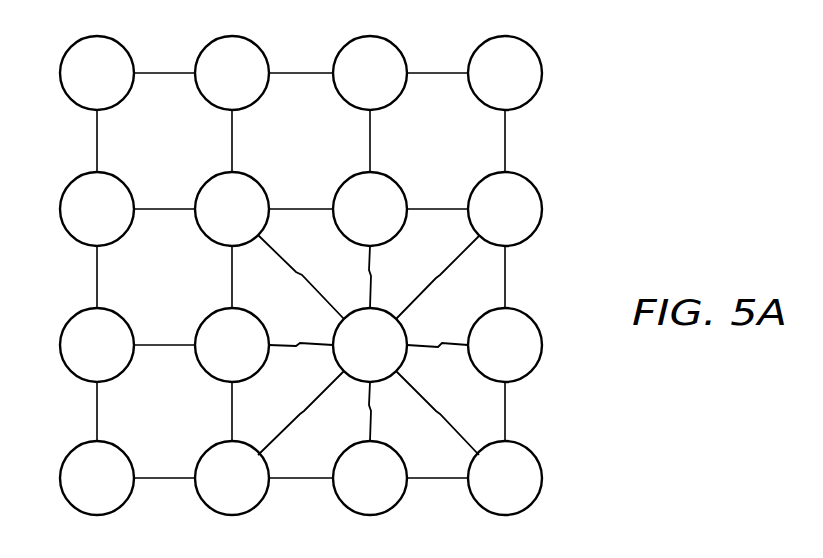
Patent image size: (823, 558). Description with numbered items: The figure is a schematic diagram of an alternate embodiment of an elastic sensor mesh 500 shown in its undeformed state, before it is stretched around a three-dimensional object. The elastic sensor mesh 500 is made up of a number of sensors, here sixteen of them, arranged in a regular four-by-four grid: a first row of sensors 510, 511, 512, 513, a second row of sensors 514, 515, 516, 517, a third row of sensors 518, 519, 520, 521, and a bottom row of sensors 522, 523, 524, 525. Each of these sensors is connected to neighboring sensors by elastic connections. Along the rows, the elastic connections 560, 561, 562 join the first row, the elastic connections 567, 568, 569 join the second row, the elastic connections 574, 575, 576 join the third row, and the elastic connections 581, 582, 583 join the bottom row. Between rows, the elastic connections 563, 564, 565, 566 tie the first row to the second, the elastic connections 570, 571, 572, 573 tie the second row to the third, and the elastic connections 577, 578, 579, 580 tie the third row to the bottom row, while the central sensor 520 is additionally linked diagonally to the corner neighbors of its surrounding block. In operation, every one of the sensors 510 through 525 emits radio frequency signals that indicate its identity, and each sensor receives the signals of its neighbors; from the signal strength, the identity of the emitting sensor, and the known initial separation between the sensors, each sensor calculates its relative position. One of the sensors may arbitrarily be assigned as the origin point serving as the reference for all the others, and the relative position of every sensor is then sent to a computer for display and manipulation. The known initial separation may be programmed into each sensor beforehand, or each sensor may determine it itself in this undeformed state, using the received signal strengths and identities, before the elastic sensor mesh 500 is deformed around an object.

The elastic sensor mesh 500 is at (633, 65).
The sensor 510 is at (118, 85).
The sensor 511 is at (253, 85).
The sensor 512 is at (391, 85).
The sensor 513 is at (526, 85).
The sensor 514 is at (118, 221).
The sensor 515 is at (253, 221).
The sensor 516 is at (391, 221).
The sensor 517 is at (526, 221).
The sensor 518 is at (118, 357).
The sensor 519 is at (253, 357).
The sensor 520 is at (391, 357).
The sensor 521 is at (526, 357).
The sensor 522 is at (118, 490).
The sensor 523 is at (253, 490).
The sensor 524 is at (391, 490).
The sensor 525 is at (526, 490).
The elastic connection 560 is at (165, 72).
The elastic connection 561 is at (300, 72).
The elastic connection 562 is at (437, 72).
The elastic connection 563 is at (97, 138).
The elastic connection 564 is at (232, 137).
The elastic connection 565 is at (368, 137).
The elastic connection 566 is at (505, 138).
The elastic connection 567 is at (165, 207).
The elastic connection 568 is at (300, 207).
The elastic connection 569 is at (437, 208).
The elastic connection 570 is at (97, 275).
The elastic connection 571 is at (232, 275).
The elastic connection 572 is at (370, 263).
The elastic connection 573 is at (506, 277).
The elastic connection 574 is at (165, 342).
The elastic connection 575 is at (293, 343).
The elastic connection 576 is at (448, 347).
The elastic connection 577 is at (97, 410).
The elastic connection 578 is at (232, 412).
The elastic connection 579 is at (365, 428).
The elastic connection 580 is at (506, 408).
The elastic connection 581 is at (163, 478).
The elastic connection 582 is at (300, 478).
The elastic connection 583 is at (437, 478).